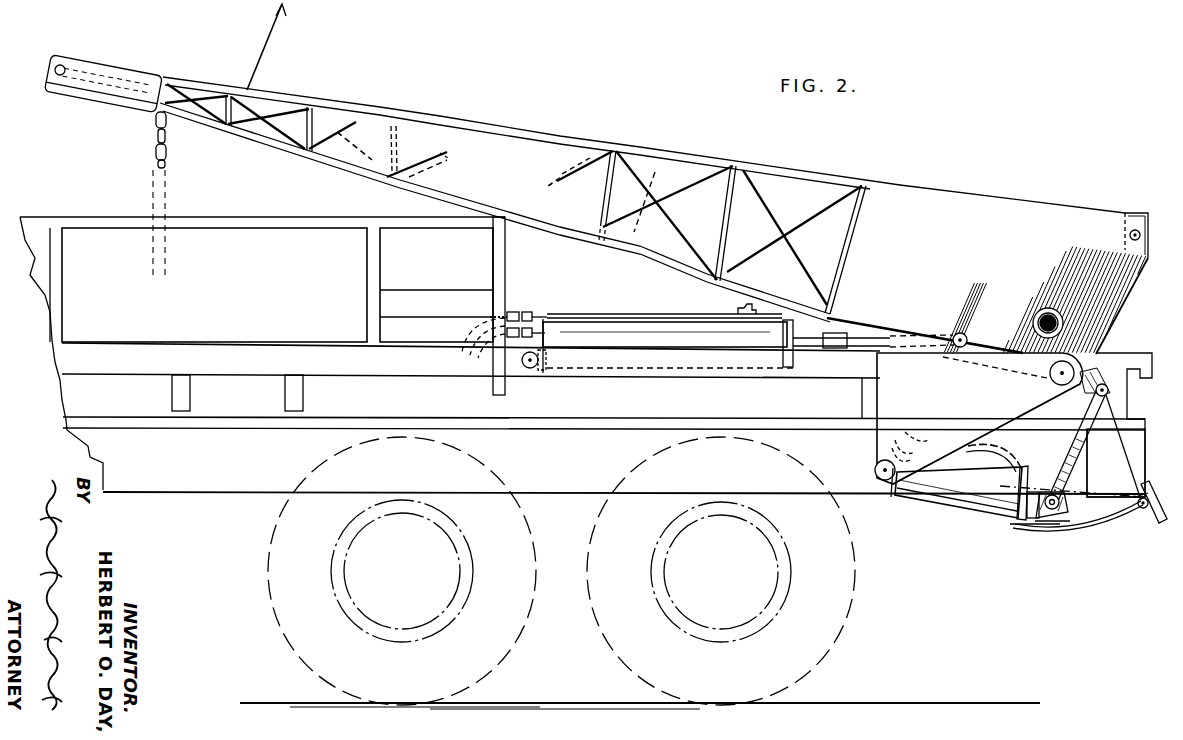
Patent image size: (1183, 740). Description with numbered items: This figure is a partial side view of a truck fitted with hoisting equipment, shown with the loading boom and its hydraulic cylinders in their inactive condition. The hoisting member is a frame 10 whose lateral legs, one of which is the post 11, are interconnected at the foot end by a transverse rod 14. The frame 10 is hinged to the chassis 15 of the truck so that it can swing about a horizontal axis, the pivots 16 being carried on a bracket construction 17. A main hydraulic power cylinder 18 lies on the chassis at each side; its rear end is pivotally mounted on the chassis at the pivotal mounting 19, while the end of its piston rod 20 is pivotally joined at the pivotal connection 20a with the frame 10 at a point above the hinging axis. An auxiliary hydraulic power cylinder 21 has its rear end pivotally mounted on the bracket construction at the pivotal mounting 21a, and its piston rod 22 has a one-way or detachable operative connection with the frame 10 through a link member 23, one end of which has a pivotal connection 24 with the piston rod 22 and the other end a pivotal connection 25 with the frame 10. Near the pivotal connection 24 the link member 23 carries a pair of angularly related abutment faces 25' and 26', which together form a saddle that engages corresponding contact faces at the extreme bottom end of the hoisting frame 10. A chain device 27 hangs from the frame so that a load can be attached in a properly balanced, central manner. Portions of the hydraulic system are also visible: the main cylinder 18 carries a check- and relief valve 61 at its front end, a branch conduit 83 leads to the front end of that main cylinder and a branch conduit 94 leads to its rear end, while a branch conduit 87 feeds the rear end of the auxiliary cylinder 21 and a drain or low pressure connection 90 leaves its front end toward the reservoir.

The hoisting frame 10 is at (153, 55).
The post 11 is at (672, 152).
The transverse rod 14 is at (1130, 233).
The chassis 15 is at (215, 350).
The pivot 16 is at (1050, 373).
The bracket construction 17 is at (980, 418).
The main hydraulic power cylinder 18 is at (620, 337).
The pivotal mounting 19 is at (530, 370).
The piston rod 20 is at (847, 340).
The pivotal connection 20a is at (956, 337).
The auxiliary hydraulic power cylinder 21 is at (959, 491).
The pivotal mounting 21a is at (875, 468).
The piston rod 22 is at (1028, 520).
The link member 23 is at (1068, 444).
The pivotal connection 24 is at (1075, 530).
The pivotal connection 25 is at (1120, 434).
The abutment face 25' is at (1117, 522).
The abutment face 26' is at (1056, 528).
The chain device 27 is at (171, 151).
The check- and relief valve 61 is at (739, 308).
The branch conduit 83 is at (507, 314).
The branch conduit 87 is at (905, 440).
The drain connection 90 is at (1000, 442).
The branch conduit 94 is at (505, 333).